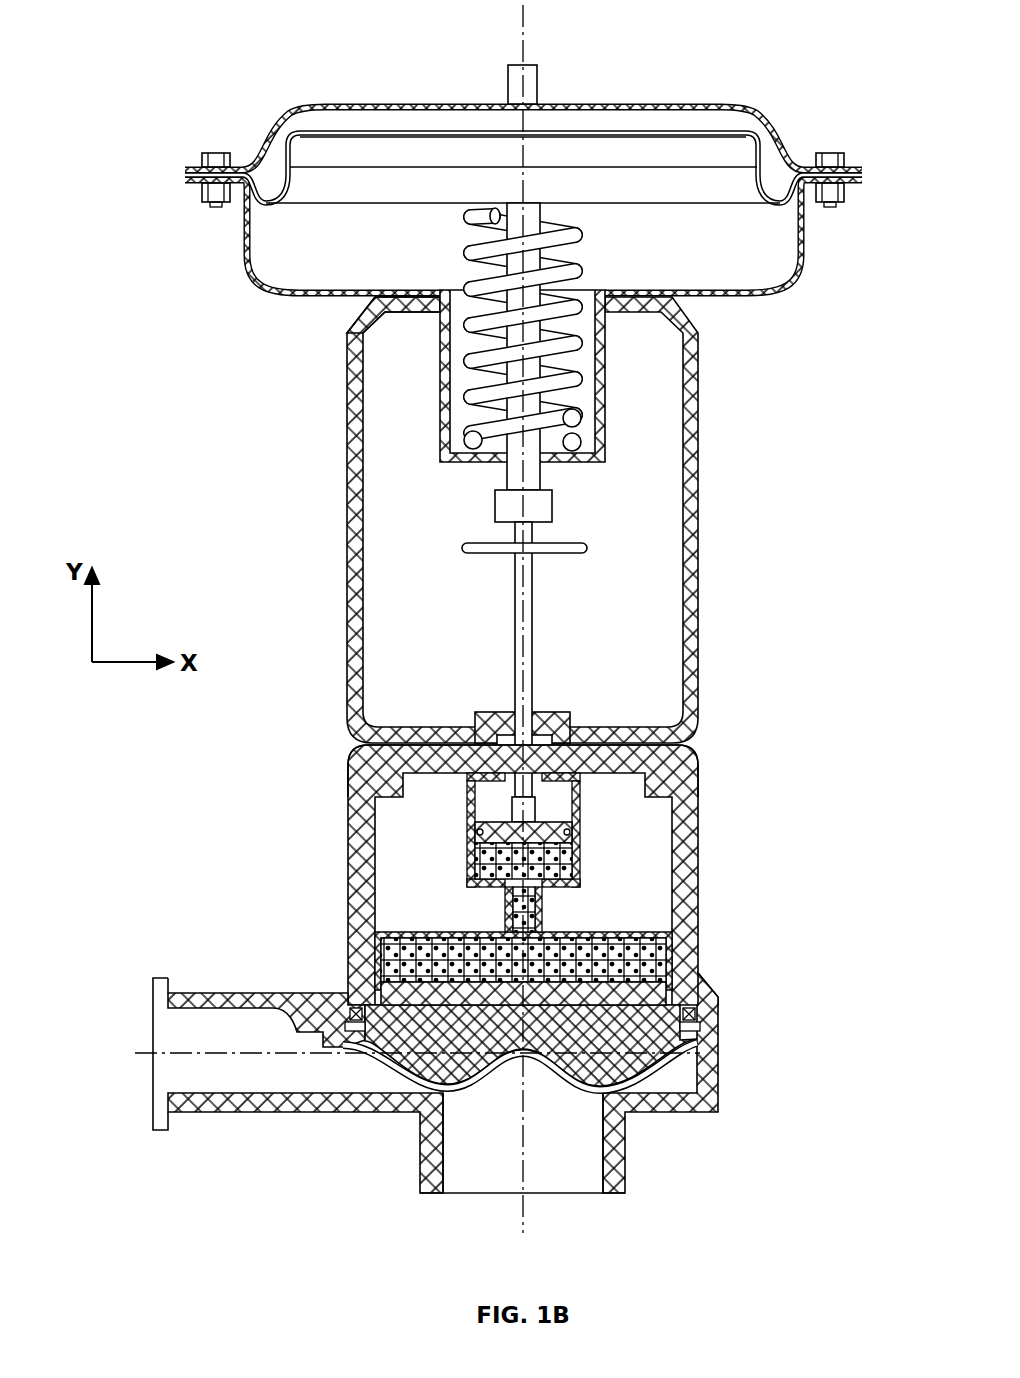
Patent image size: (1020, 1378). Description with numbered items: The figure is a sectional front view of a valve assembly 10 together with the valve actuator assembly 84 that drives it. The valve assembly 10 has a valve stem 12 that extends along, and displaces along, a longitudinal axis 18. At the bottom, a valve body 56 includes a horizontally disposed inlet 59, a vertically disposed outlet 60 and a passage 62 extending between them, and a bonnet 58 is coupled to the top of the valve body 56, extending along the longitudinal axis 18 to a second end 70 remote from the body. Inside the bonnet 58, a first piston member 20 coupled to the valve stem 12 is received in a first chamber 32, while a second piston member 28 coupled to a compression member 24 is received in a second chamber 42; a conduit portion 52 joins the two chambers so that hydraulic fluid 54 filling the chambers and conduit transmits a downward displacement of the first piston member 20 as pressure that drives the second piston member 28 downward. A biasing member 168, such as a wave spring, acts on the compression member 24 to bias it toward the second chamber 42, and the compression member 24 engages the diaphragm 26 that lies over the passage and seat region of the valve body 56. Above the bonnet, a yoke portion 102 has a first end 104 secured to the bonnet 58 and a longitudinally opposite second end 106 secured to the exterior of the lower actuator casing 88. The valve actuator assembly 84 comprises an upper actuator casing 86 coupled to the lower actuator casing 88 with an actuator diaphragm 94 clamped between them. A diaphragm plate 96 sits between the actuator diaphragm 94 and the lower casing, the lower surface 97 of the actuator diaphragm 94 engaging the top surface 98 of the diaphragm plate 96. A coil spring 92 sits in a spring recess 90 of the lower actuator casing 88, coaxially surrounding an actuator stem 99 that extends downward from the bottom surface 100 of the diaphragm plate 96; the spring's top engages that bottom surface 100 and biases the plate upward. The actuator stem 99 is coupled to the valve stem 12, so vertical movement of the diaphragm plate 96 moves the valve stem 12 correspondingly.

The valve assembly 10 is at (477, 994).
The valve stem 12 is at (533, 650).
The longitudinal axis 18 is at (527, 17).
The first piston member 20 is at (575, 833).
The compression member 24 is at (635, 1033).
The diaphragm 26 is at (660, 1066).
The second piston member 28 is at (645, 965).
The first chamber 32 is at (466, 802).
The second chamber 42 is at (625, 932).
The conduit portion 52 is at (545, 905).
The hydraulic fluid 54 is at (565, 858).
The valve body 56 is at (630, 1143).
The bonnet 58 is at (700, 790).
The inlet 59 is at (483, 1175).
The outlet 60 is at (173, 1070).
The passage 62 is at (315, 1078).
The second end 70 is at (350, 760).
The valve actuator assembly 84 is at (523, 167).
The upper actuator casing 86 is at (710, 104).
The lower actuator casing 88 is at (788, 278).
The spring recess 90 is at (598, 365).
The coil spring 92 is at (560, 405).
The actuator diaphragm 94 is at (790, 168).
The diaphragm plate 96 is at (305, 150).
The lower surface 97 is at (345, 137).
The top surface 98 is at (438, 133).
The actuator stem 99 is at (468, 440).
The bottom surface 100 is at (330, 165).
The yoke portion 102 is at (700, 520).
The first end 104 is at (700, 710).
The second end 106 is at (350, 318).
The biasing member 168 is at (665, 1000).